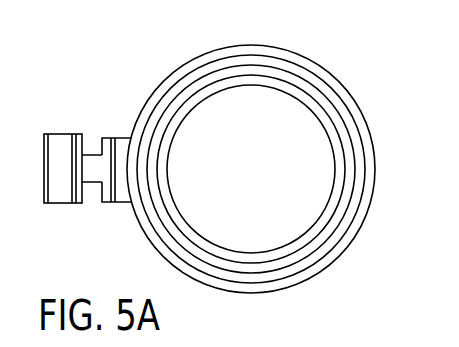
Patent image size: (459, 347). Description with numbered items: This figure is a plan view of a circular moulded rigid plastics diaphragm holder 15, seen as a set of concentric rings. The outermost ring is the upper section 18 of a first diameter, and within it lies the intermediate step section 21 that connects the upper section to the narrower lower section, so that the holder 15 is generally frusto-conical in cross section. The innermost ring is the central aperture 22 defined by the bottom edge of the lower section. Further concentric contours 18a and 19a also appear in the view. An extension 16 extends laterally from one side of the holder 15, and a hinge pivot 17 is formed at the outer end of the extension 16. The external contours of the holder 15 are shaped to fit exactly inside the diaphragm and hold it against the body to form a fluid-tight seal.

The diaphragm holder 15 is at (118, 245).
The extension 16 is at (125, 140).
The hinge pivot 17 is at (63, 203).
The upper section 18 is at (353, 208).
The outer ring groove 18a is at (295, 72).
The inner ring 19a is at (298, 93).
The intermediate step section 21 is at (188, 98).
The central aperture 22 is at (272, 252).